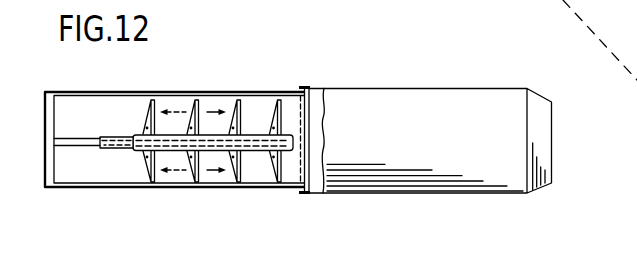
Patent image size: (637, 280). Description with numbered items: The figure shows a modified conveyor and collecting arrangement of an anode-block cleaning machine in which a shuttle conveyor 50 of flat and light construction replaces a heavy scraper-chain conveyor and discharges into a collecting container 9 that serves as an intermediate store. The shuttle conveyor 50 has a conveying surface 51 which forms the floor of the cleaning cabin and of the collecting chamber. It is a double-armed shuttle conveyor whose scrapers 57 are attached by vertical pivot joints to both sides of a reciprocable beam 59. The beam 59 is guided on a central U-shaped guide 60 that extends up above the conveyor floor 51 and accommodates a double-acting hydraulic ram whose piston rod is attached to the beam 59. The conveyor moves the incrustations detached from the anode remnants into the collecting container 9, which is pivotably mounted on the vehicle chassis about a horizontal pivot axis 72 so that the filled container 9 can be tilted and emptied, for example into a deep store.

The collecting container 9 is at (410, 95).
The shuttle conveyor 50 is at (188, 154).
The conveying surface 51 is at (98, 177).
The scrapers 57 is at (148, 116).
The reciprocable beam 59 is at (258, 151).
The central U-shaped guide 60 is at (80, 140).
The horizontal pivot axis 72 is at (304, 86).